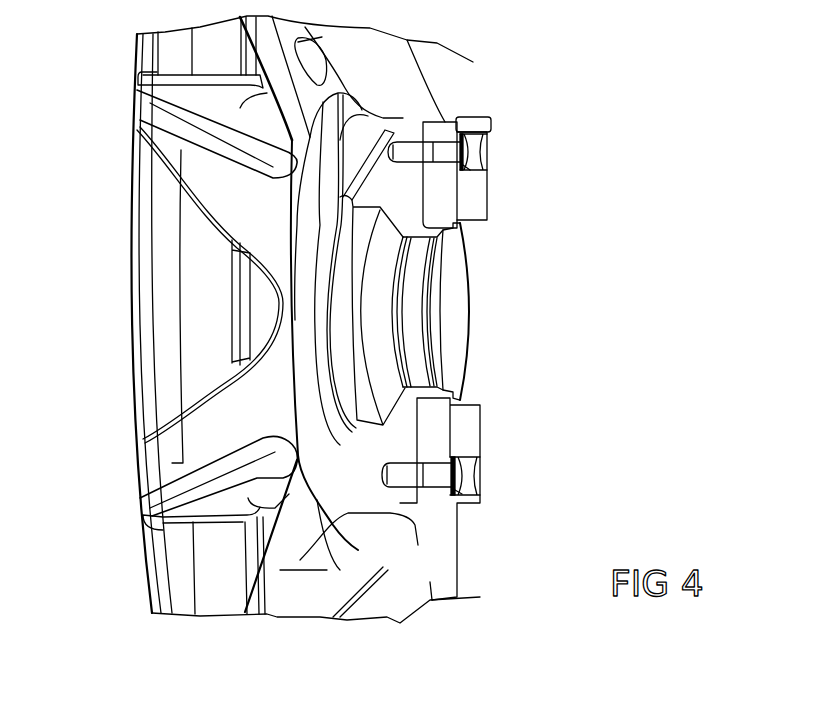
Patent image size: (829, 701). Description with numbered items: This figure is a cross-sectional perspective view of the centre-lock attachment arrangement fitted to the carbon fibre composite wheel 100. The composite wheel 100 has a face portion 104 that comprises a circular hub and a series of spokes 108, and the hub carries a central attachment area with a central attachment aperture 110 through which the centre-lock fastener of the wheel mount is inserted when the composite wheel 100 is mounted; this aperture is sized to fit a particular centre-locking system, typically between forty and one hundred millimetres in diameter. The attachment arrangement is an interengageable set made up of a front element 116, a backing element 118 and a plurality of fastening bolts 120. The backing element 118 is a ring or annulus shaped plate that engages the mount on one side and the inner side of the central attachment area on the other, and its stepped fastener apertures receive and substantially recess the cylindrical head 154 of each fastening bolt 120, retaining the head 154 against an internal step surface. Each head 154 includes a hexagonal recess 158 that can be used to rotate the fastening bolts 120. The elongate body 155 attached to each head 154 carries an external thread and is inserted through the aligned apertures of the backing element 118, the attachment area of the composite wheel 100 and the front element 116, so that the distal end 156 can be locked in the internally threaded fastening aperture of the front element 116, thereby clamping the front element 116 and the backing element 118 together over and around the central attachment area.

The centre-lock carbon fibre composite wheel 100 is at (432, 583).
The face portion 104 is at (120, 322).
The spokes 108 is at (183, 145).
The central attachment aperture 110 is at (512, 342).
The front element 116 is at (390, 177).
The backing element 118 is at (472, 125).
The fastening bolts 120 is at (468, 167).
The head 154 is at (457, 140).
The elongate body 155 is at (473, 225).
The distal end 156 is at (350, 470).
The hexagonal recess 158 is at (487, 155).